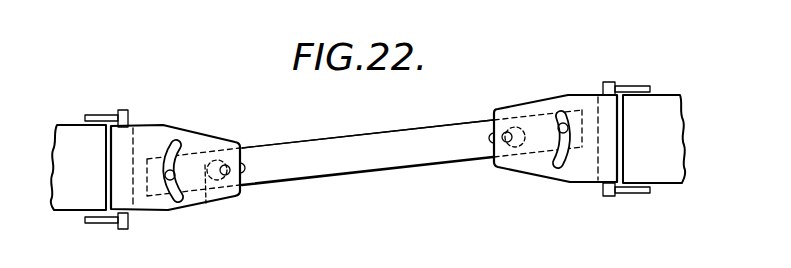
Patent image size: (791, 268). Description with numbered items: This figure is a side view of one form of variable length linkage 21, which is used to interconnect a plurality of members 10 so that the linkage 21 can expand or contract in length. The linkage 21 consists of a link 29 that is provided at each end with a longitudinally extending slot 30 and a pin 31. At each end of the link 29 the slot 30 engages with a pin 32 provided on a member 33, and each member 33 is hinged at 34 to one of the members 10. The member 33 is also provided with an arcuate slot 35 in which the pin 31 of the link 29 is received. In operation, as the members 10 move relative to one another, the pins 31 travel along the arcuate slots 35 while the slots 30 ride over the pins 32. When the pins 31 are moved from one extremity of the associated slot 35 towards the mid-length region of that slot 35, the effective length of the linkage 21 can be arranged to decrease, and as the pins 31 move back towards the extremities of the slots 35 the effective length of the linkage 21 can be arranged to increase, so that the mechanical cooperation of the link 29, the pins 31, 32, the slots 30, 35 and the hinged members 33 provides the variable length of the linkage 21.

The member 10 is at (49, 130).
The linkage 21 is at (371, 175).
The link 29 is at (372, 104).
The longitudinally extending slot 30 is at (206, 203).
The pin 31 is at (174, 171).
The pin 32 is at (226, 165).
The member 33 is at (206, 134).
The hinge 34 is at (123, 110).
The arcuate slot 35 is at (178, 200).